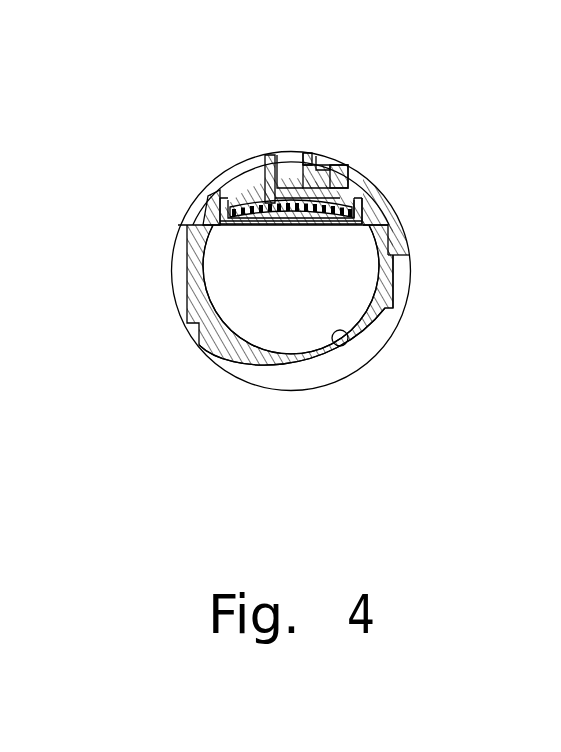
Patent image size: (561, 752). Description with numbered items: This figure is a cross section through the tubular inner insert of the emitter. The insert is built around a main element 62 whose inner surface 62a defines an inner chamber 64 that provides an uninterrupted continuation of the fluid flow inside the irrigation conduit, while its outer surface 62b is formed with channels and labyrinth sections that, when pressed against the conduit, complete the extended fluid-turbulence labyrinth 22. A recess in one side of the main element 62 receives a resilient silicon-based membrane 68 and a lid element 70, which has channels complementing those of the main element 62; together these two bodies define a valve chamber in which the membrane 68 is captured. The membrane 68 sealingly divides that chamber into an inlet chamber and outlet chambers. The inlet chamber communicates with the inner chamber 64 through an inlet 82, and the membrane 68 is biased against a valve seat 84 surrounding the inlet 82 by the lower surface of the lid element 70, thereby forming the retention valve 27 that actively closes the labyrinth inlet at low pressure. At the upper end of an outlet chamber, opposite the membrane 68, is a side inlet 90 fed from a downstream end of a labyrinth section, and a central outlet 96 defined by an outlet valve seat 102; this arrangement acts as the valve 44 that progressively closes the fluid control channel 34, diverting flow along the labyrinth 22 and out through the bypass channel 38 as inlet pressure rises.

The labyrinth 22 is at (323, 400).
The retention valve 27 is at (231, 263).
The fluid control channel 34 is at (193, 209).
The bypass channel 38 is at (297, 157).
The valve 44 is at (340, 132).
The main element 62 is at (388, 297).
The inner surface 62a is at (348, 343).
The outer surface 62b is at (400, 263).
The inner chamber 64 is at (240, 343).
The membrane 68 is at (297, 220).
The lid element 70 is at (395, 217).
The inlet 82 is at (288, 225).
The valve seat 84 is at (255, 187).
The side inlet 90 is at (262, 182).
The central outlet 96 is at (280, 176).
The outlet valve seat 102 is at (350, 187).